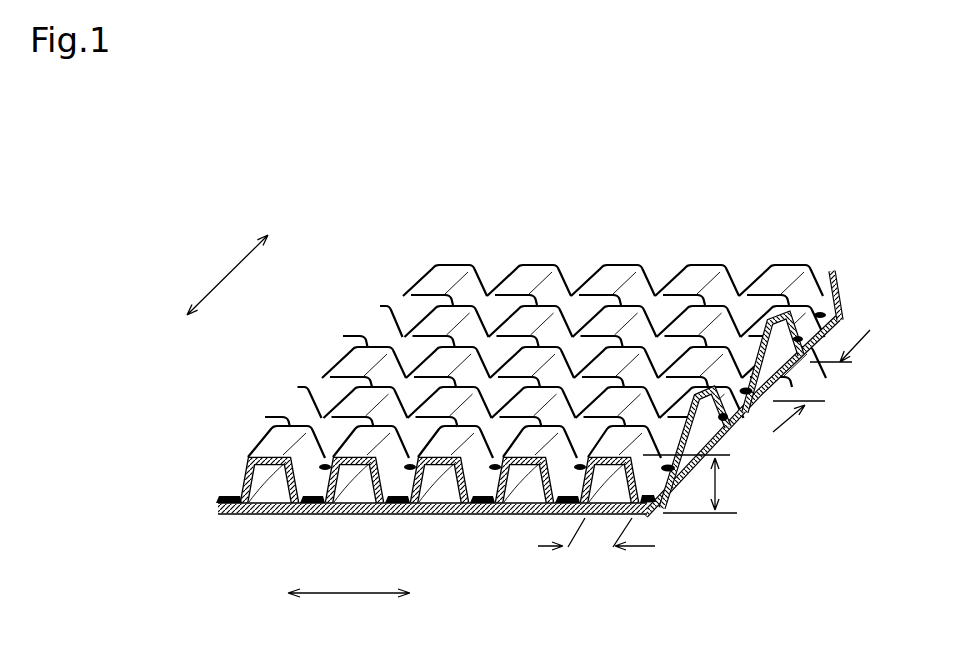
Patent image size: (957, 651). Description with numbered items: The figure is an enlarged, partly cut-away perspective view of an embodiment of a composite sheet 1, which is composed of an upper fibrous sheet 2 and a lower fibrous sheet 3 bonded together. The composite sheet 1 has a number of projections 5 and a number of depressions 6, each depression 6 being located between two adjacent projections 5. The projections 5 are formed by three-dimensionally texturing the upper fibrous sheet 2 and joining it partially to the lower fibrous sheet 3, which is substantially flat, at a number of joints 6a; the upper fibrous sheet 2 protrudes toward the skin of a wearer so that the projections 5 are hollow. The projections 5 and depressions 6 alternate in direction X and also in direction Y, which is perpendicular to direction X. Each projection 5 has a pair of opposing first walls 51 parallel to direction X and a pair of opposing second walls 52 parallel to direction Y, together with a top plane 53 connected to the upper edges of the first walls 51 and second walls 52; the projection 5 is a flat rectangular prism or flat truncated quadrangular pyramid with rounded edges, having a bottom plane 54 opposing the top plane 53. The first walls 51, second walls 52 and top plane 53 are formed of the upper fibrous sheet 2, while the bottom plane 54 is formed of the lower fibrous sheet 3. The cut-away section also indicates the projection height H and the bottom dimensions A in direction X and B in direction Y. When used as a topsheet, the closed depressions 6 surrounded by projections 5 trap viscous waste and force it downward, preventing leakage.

The composite sheet 1 is at (595, 184).
The upper fibrous sheet 2 is at (784, 272).
The lower fibrous sheet 3 is at (720, 442).
The projection 5 is at (455, 264).
The depression 6 is at (477, 297).
The joint 6a is at (301, 505).
The first wall 51 is at (640, 260).
The second wall 52 is at (714, 299).
The top plane 53 is at (527, 277).
The bottom plane 54 is at (358, 506).